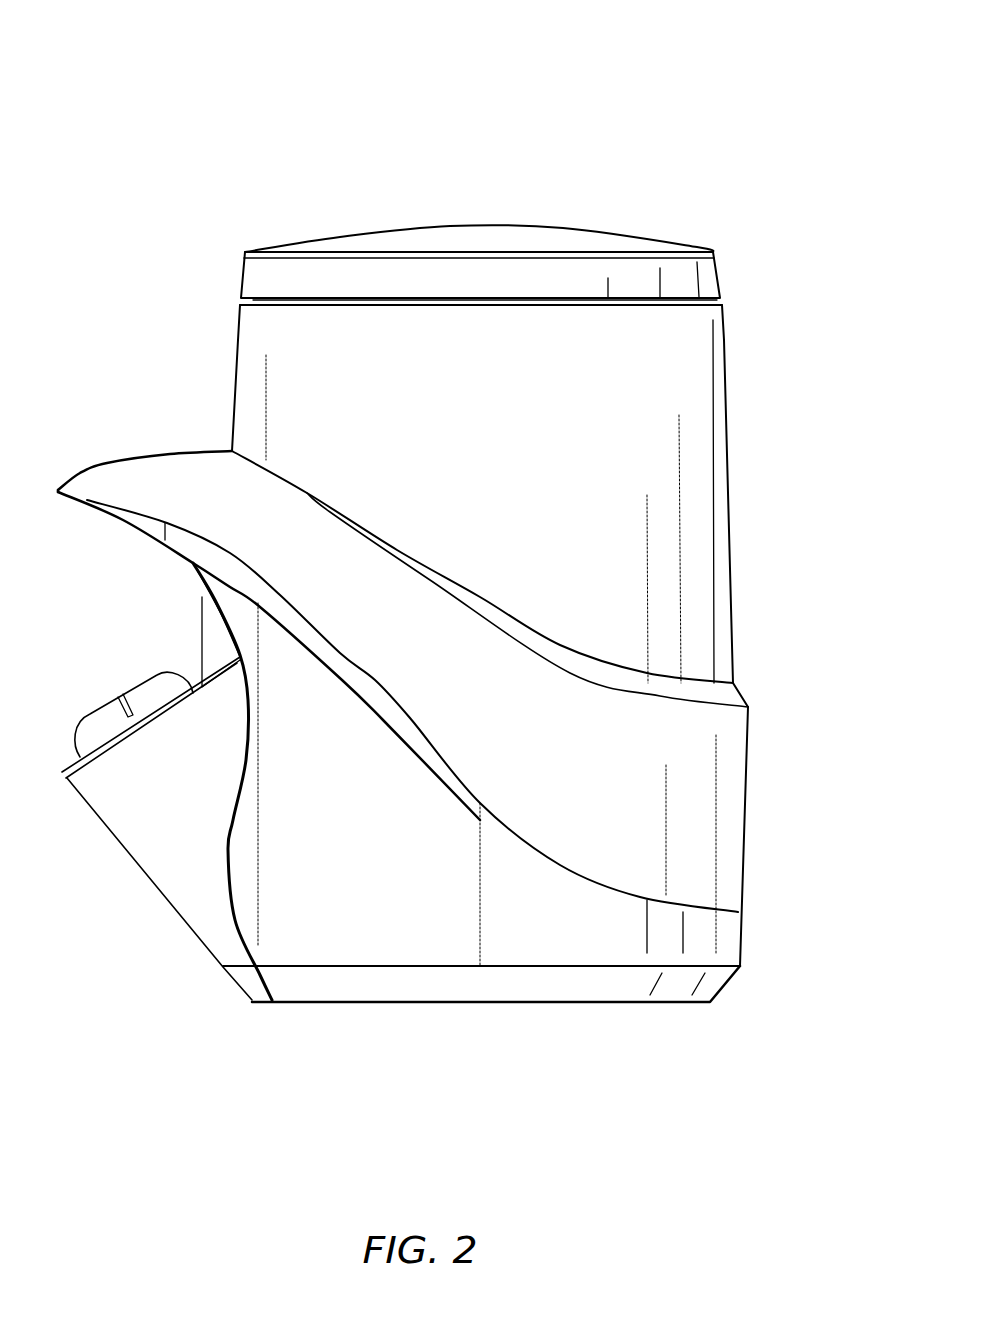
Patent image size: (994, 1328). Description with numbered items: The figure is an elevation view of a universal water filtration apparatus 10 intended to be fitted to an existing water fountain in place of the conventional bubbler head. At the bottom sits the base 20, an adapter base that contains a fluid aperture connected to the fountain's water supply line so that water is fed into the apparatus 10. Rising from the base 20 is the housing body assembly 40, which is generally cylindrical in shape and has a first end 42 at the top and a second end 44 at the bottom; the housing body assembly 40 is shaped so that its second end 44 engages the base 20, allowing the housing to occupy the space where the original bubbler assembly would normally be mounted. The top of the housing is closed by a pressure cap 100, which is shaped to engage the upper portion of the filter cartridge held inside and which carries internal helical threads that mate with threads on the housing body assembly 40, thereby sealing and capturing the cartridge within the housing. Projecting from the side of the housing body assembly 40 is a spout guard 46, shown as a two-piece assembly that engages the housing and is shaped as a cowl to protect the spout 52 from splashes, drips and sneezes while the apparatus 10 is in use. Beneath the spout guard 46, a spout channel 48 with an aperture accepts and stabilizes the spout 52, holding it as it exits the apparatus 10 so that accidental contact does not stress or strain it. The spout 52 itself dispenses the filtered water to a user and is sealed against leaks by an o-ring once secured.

The filtration apparatus 10 is at (602, 70).
The pressure cap 100 is at (480, 235).
The first end 42 is at (713, 330).
The housing body assembly 40 is at (693, 464).
The second end 44 is at (727, 952).
The spout guard 46 is at (127, 477).
The spout channel 48 is at (175, 862).
The spout 52 is at (98, 720).
The base 20 is at (570, 988).